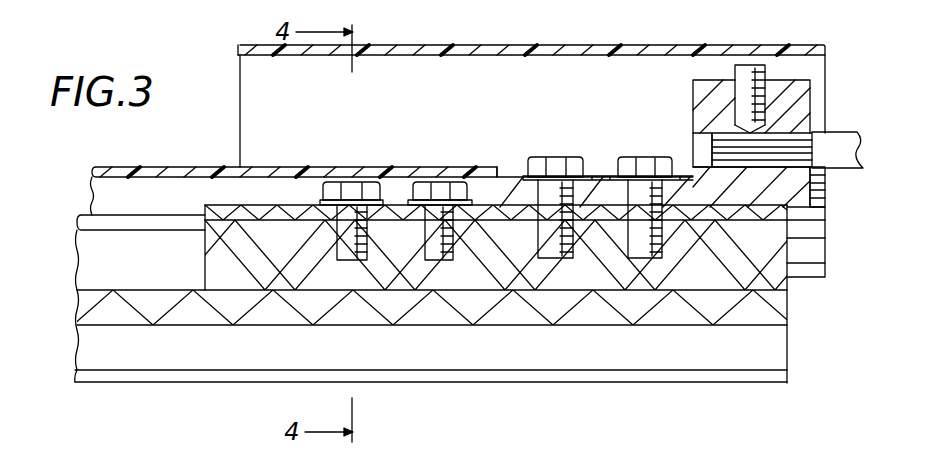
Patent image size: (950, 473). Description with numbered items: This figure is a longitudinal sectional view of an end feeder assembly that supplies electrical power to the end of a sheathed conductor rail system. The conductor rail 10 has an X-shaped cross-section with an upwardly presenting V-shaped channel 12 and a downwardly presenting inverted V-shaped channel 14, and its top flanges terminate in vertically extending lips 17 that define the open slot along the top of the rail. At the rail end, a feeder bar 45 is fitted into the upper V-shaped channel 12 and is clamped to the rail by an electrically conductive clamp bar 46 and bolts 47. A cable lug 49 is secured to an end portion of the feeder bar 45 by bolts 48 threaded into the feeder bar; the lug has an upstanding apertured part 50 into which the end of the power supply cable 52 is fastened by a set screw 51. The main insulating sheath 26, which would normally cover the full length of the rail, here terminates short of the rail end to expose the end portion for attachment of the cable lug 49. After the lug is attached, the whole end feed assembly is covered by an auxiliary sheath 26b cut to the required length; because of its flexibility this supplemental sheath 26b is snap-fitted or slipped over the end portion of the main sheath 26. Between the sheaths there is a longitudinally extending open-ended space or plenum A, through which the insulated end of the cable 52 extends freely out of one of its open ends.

The conductor rail 10 is at (163, 315).
The V-shaped channel 12 is at (130, 247).
The inverted V-shaped channel 14 is at (127, 340).
The lip 17 is at (149, 224).
The insulating sheath 26 is at (178, 170).
The auxiliary sheath 26b is at (453, 50).
The feeder bar 45 is at (252, 252).
The clamp bar 46 is at (273, 210).
The bolts 47 is at (437, 197).
The bolts 48 is at (643, 167).
The cable lug 49 is at (708, 183).
The upstanding apertured part 50 is at (705, 97).
The set screw 51 is at (744, 88).
The power supply cable 52 is at (833, 148).
The plenum A is at (326, 97).